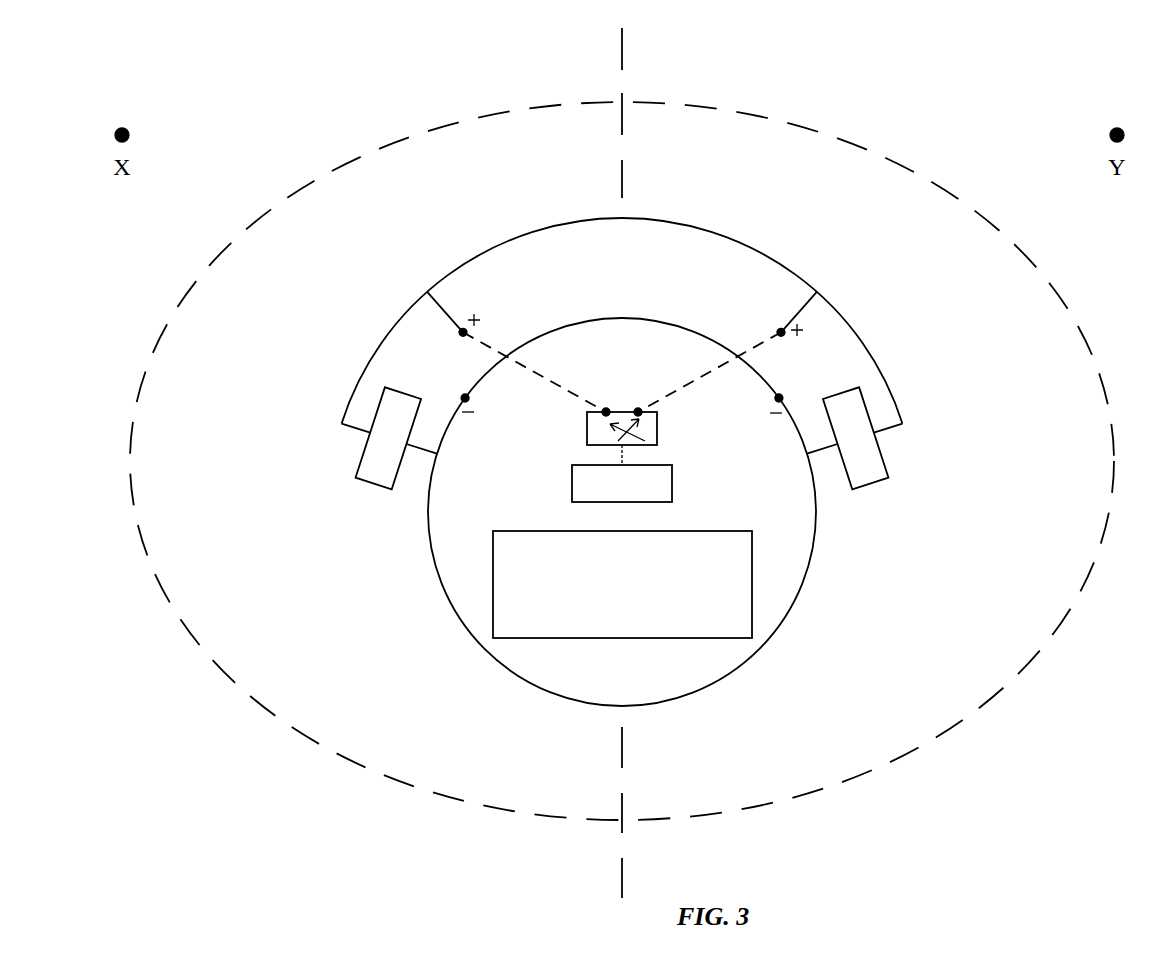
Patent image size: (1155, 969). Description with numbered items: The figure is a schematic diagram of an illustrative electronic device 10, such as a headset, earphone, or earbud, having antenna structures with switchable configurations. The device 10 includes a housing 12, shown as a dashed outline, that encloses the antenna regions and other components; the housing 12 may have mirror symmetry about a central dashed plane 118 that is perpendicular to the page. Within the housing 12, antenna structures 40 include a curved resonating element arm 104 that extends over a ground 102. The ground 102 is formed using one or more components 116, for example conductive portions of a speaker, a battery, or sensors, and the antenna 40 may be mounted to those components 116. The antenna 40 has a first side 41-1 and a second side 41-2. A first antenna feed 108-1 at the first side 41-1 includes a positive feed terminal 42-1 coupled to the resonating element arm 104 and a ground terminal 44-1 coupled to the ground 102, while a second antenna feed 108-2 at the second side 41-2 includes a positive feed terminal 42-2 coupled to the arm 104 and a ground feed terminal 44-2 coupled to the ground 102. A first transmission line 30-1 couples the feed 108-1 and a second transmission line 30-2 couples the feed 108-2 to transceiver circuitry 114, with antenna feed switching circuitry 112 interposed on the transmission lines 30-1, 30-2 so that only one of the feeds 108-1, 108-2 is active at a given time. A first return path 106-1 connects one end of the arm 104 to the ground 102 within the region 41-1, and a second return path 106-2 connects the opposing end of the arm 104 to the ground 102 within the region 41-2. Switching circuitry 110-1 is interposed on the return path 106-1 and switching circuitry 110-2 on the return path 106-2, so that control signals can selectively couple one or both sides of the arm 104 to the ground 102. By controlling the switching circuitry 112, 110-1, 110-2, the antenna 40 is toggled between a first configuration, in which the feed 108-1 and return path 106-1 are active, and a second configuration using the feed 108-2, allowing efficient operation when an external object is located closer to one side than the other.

The electronic device 10 is at (806, 74).
The housing 12 is at (842, 786).
The antenna structures 40 is at (496, 152).
The first side of antenna 41-1 is at (308, 370).
The second side of antenna 41-2 is at (932, 402).
The positive feed terminal 42-1 is at (463, 338).
The positive feed terminal 42-2 is at (781, 328).
The ground terminal 44-1 is at (468, 402).
The ground feed terminal 44-2 is at (776, 402).
The first transmission line 30-1 is at (543, 377).
The second transmission line 30-2 is at (701, 388).
The ground 102 is at (432, 535).
The resonating element arm 104 is at (680, 222).
The first return path 106-1 is at (356, 434).
The second return path 106-2 is at (823, 458).
The antenna feed 108-1 is at (506, 334).
The antenna feed 108-2 is at (770, 364).
The switching circuitry 110-1 is at (372, 488).
The switching circuitry 110-2 is at (876, 485).
The antenna feed switching circuitry 112 is at (620, 411).
The transceiver circuitry 114 is at (672, 485).
The components 116 is at (752, 607).
The dashed plane 118 is at (623, 44).